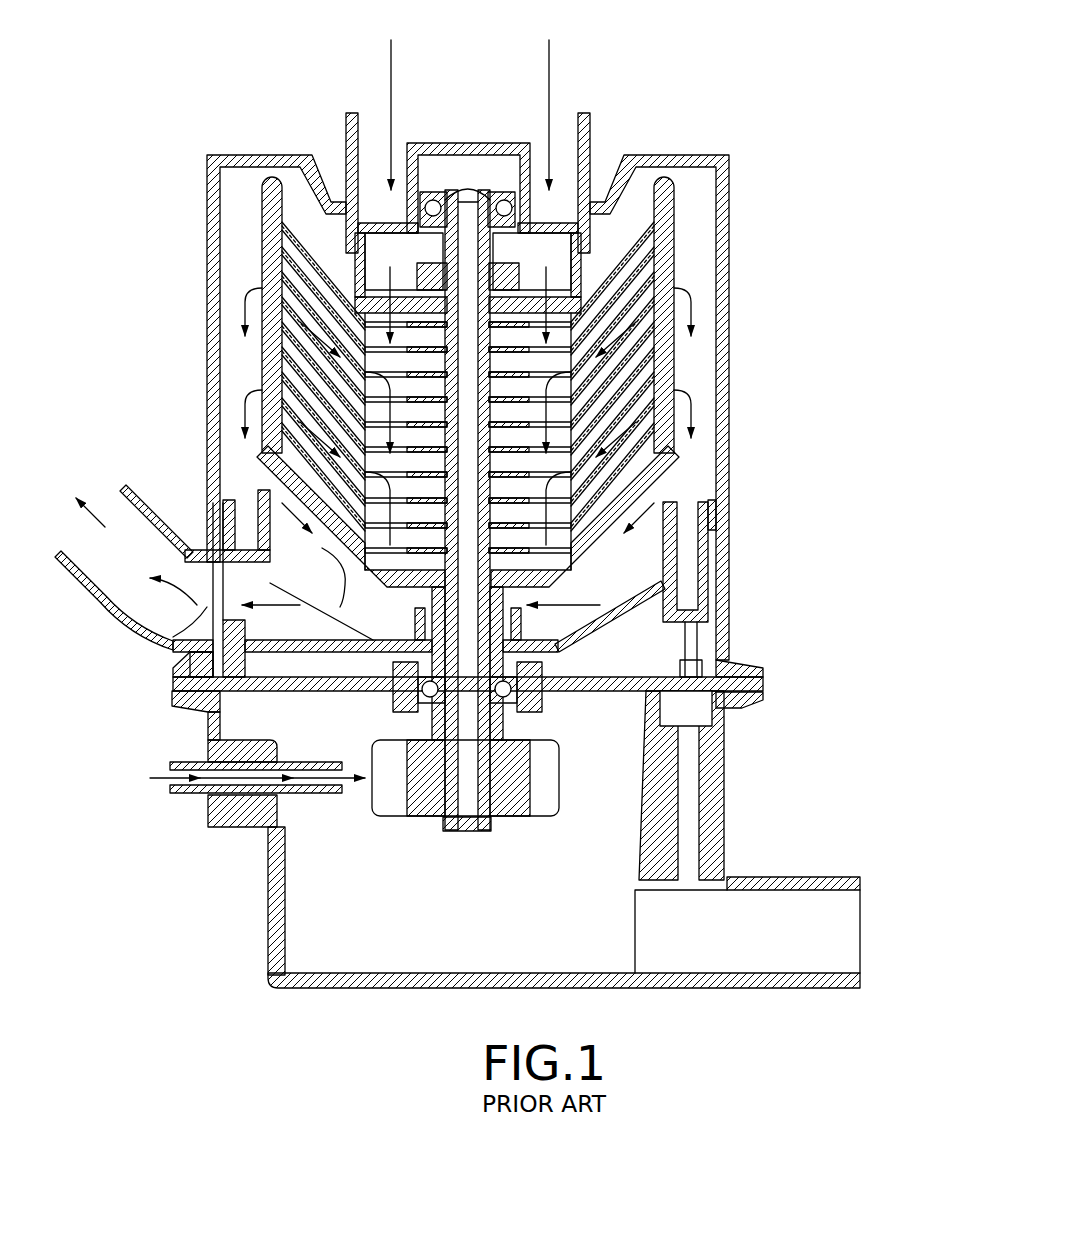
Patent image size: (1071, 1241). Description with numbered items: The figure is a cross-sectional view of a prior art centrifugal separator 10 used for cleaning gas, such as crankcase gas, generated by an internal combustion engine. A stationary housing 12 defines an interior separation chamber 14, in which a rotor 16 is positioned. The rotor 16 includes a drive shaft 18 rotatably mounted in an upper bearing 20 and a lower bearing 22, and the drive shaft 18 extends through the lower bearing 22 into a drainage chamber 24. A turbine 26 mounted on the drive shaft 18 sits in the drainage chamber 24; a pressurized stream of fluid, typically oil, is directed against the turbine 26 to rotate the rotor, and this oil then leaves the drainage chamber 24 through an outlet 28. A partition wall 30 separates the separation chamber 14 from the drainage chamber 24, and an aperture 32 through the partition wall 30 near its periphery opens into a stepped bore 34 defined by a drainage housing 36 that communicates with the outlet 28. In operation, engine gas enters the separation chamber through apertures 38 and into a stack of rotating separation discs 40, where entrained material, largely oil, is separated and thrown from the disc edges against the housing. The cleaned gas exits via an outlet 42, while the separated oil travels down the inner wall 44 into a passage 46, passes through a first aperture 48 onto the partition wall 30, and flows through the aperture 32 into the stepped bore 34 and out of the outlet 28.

The centrifugal separator 10 is at (697, 87).
The stationary housing 12 is at (706, 156).
The interior separation chamber 14 is at (707, 193).
The rotor 16 is at (682, 252).
The drive shaft 18 is at (476, 188).
The upper bearing 20 is at (437, 190).
The lower bearing 22 is at (541, 711).
The drainage chamber 24 is at (350, 960).
The turbine 26 is at (513, 817).
The outlet 28 is at (760, 960).
The partition wall 30 is at (623, 689).
The aperture 32 is at (674, 683).
The stepped bore 34 is at (683, 847).
The drainage housing 36 is at (270, 963).
The apertures 38 is at (388, 224).
The stack of rotating separation discs 40 is at (261, 222).
The outlet 42 is at (162, 640).
The inner wall 44 is at (213, 300).
The passage 46 is at (250, 513).
The first aperture 48 is at (688, 606).